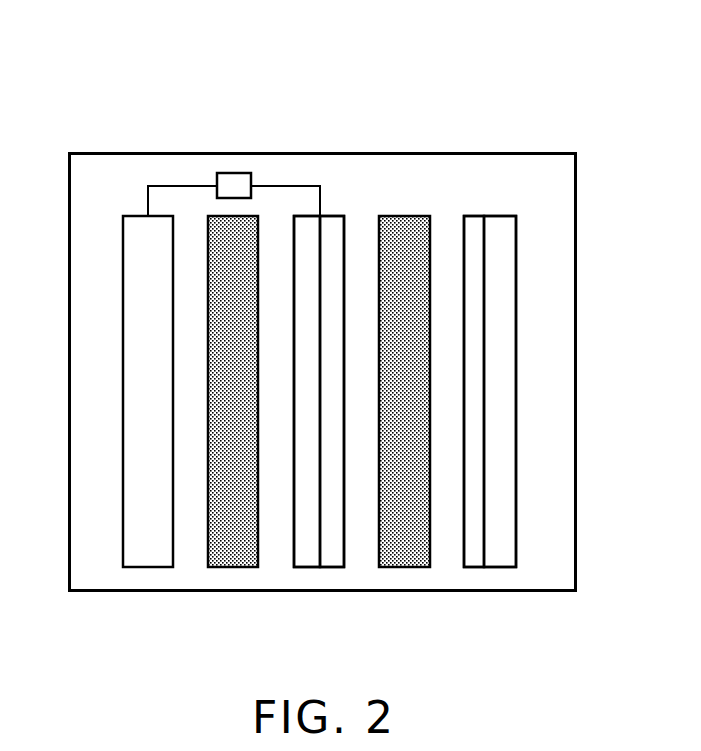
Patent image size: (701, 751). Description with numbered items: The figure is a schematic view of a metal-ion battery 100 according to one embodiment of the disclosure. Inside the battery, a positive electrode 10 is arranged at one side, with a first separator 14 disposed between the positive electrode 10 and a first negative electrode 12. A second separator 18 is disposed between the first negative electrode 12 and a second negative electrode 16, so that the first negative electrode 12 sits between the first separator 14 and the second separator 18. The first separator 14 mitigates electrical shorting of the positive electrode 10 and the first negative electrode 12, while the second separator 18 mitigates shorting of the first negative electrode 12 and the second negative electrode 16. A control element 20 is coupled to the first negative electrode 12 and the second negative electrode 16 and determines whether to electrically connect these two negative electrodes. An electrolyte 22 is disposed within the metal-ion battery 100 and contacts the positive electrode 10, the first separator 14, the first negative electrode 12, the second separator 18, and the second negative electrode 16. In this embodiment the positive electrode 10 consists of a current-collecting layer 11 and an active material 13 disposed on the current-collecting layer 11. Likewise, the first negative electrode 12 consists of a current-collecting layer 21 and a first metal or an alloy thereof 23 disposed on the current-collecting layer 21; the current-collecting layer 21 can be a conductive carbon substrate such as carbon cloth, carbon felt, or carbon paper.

The metal-ion battery 100 is at (553, 127).
The electrolyte 22 is at (517, 197).
The control element 20 is at (233, 173).
The second negative electrode 16 is at (150, 567).
The second separator 18 is at (233, 567).
The first negative electrode 12 is at (327, 453).
The first metal or an alloy thereof 23 is at (307, 567).
The current-collecting layer 21 is at (328, 567).
The first separator 14 is at (405, 567).
The positive electrode 10 is at (497, 453).
The active material 13 is at (475, 567).
The current-collecting layer 11 is at (498, 567).